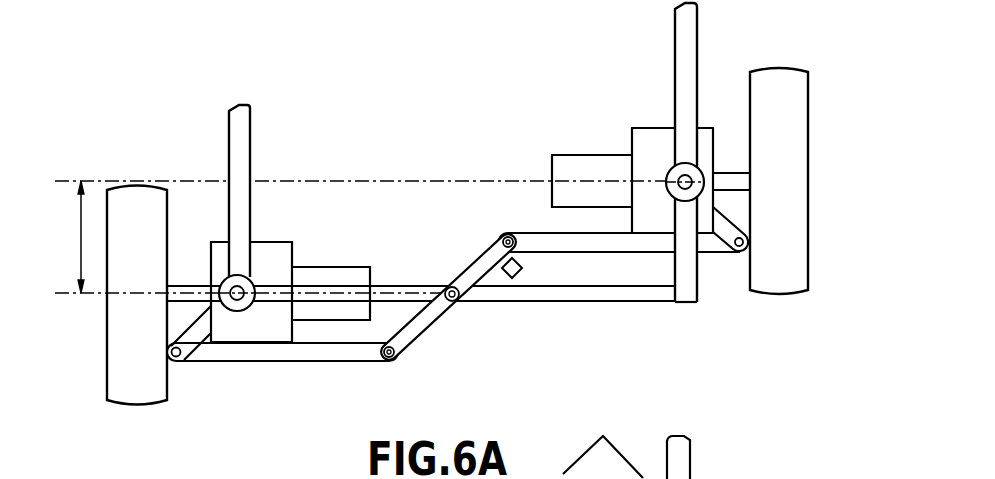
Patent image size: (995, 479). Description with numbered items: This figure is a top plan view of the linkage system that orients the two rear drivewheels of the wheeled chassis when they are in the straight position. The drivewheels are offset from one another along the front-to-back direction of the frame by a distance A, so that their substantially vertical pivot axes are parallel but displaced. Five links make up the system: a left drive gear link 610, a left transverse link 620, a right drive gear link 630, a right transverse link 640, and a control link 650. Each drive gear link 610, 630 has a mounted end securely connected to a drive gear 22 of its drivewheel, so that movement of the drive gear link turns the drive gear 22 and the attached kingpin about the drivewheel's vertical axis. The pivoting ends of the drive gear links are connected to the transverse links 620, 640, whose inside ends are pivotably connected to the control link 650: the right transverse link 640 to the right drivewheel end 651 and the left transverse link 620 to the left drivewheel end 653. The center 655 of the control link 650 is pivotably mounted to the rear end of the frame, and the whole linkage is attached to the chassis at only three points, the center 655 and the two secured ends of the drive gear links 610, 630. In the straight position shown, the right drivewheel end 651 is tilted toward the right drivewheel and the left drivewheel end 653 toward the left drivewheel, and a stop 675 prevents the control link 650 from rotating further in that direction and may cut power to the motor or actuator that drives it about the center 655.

The drive gear 22 is at (230, 290).
The left drive gear link 610 is at (122, 357).
The left transverse link 620 is at (288, 352).
The right drive gear link 630 is at (800, 160).
The right transverse link 640 is at (633, 247).
The control link 650 is at (428, 313).
The right drivewheel end 651 is at (503, 235).
The left drivewheel end 653 is at (400, 358).
The center 655 is at (447, 287).
The stop 675 is at (523, 270).
The offset distance A is at (81, 248).